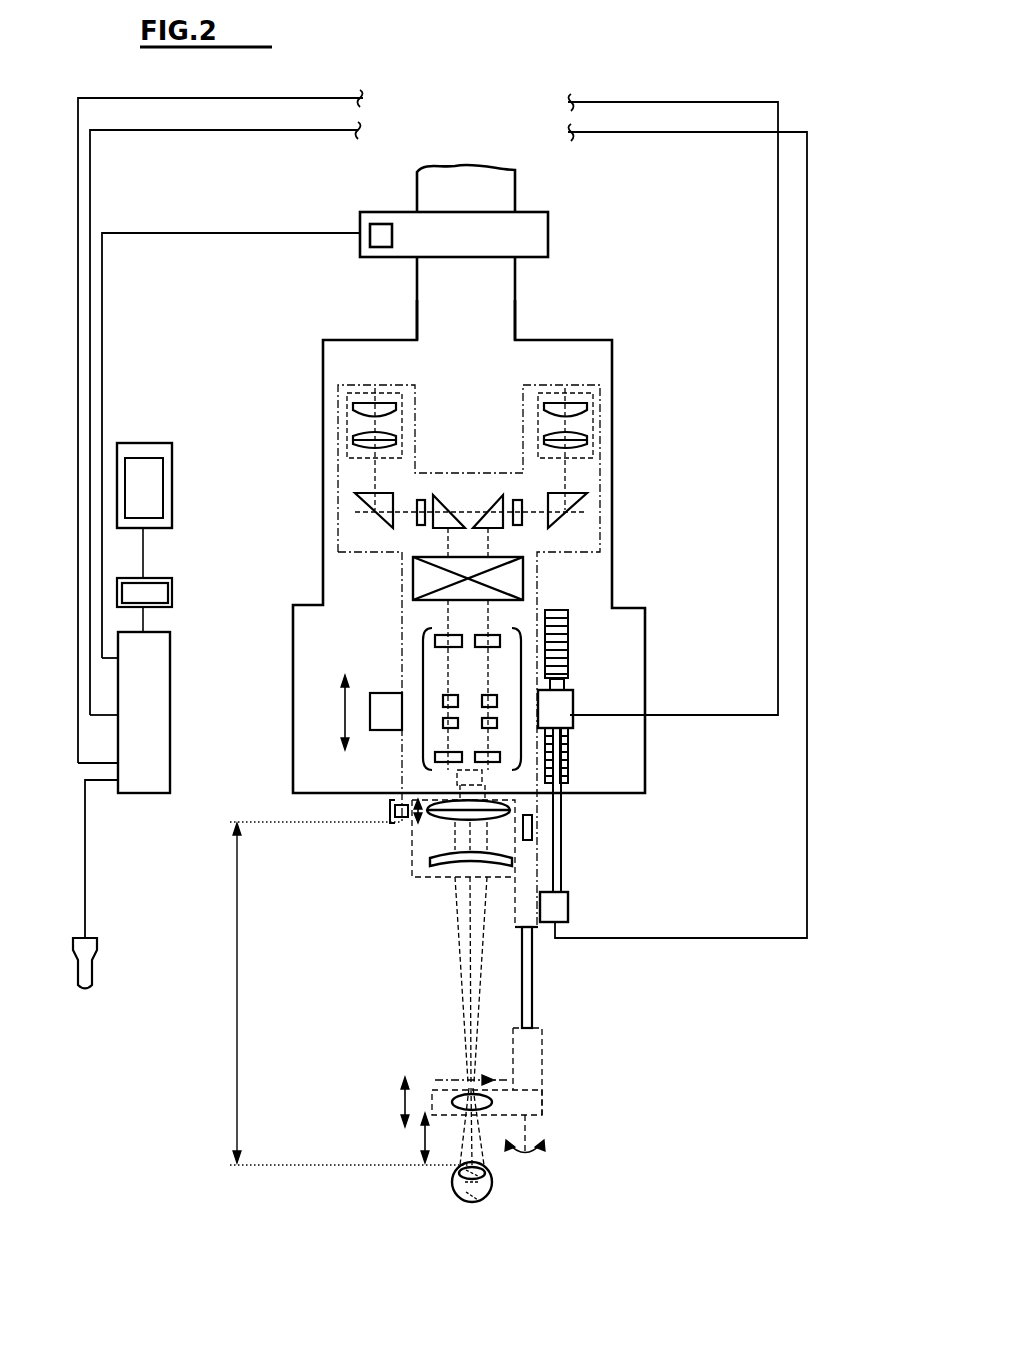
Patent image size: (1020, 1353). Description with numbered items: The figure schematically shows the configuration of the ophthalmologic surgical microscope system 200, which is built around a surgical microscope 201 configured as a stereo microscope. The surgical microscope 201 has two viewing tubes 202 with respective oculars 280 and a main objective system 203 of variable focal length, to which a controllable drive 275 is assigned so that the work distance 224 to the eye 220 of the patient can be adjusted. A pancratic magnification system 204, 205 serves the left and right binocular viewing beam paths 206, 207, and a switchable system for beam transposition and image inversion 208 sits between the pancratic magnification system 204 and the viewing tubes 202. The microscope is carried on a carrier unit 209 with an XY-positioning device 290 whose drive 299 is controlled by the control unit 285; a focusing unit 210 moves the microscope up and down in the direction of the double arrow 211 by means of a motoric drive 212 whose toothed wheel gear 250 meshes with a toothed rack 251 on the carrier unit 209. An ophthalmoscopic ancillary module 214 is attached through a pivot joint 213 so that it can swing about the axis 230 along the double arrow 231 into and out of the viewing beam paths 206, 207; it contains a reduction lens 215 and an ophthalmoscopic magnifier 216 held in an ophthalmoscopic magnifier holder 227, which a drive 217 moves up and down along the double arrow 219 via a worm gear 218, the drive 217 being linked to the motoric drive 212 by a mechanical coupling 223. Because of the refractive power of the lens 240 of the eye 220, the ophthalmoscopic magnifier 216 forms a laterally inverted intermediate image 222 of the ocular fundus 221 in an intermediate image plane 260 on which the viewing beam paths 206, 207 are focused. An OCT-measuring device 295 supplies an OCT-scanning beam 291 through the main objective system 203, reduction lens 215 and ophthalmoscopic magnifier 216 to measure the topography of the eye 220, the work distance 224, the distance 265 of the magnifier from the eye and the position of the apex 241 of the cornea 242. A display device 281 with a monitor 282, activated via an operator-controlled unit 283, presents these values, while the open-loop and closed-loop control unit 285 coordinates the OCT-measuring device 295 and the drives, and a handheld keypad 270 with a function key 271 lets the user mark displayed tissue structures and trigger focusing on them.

The ophthalmologic surgical microscope system 200 is at (282, 492).
The surgical microscope 201 is at (523, 612).
The viewing tubes 202 is at (630, 377).
The main objective system 203 is at (395, 812).
The pancratic magnification system 204 is at (423, 700).
The pancratic magnification system 205 is at (548, 668).
The left viewing beam path 206 is at (460, 778).
The right viewing beam path 207 is at (490, 778).
The switchable system for beam transposition and image inversion 208 is at (425, 578).
The carrier unit 209 is at (478, 337).
The focusing unit 210 is at (390, 728).
The double arrow 211 is at (345, 722).
The motoric drive 212 is at (565, 720).
The pivot joint 213 is at (512, 812).
The ophthalmoscopic ancillary module 214 is at (512, 860).
The reduction lens 215 is at (440, 866).
The ophthalmoscopic magnifier 216 is at (487, 1098).
The drive 217 is at (555, 908).
The worm gear 218 is at (530, 975).
The double arrow 219 is at (400, 1100).
The eye 220 is at (490, 1195).
The ocular fundus 221 is at (460, 1198).
The intermediate image 222 is at (470, 1076).
The coupling 223 is at (535, 832).
The work distance 224 is at (235, 988).
The ophthalmoscopic magnifier holder 227 is at (530, 1050).
The axis 230 is at (522, 1125).
The double arrow 231 is at (480, 1160).
The lens 240 is at (488, 1187).
The apex 241 is at (485, 1175).
The cornea 242 is at (452, 1168).
The toothed wheel gear 250 is at (570, 700).
The toothed rack 251 is at (548, 622).
The intermediate image plane 260 is at (460, 1078).
The distance 265 is at (418, 1135).
The handheld keypad 270 is at (78, 1015).
The function key 271 is at (82, 938).
The controllable drive 275 is at (418, 822).
The oculars 280 is at (345, 410).
The display device 281 is at (128, 443).
The monitor 282 is at (150, 462).
The operator-controlled unit 283 is at (162, 578).
The open-loop and closed-loop control unit 285 is at (137, 795).
The XY-positioning device 290 is at (548, 215).
The OCT-scanning beam 291 is at (480, 1000).
The OCT-measuring device 295 is at (545, 770).
The drive 299 is at (382, 230).